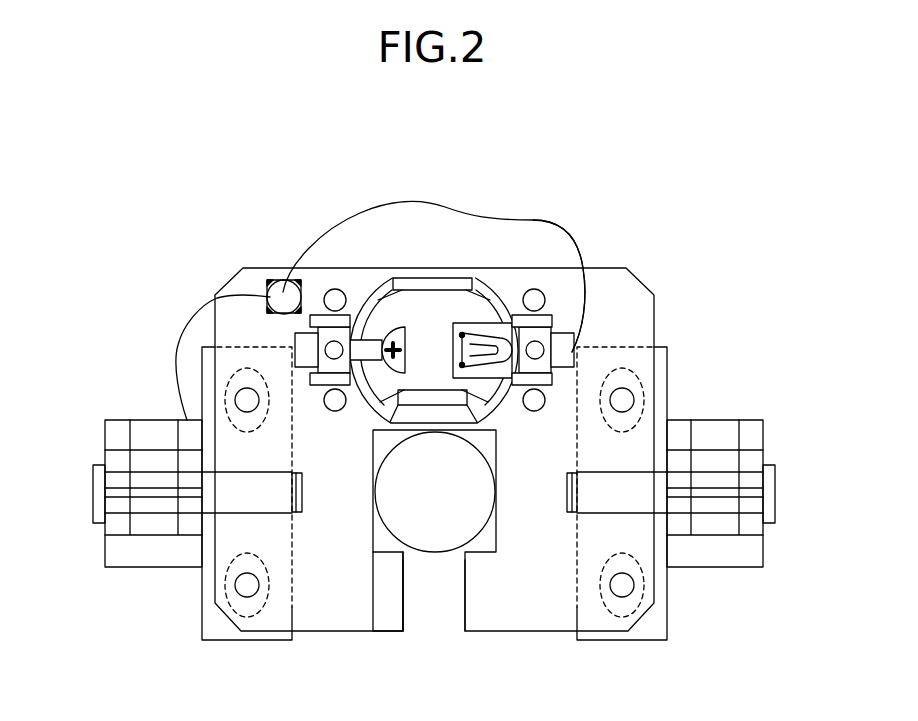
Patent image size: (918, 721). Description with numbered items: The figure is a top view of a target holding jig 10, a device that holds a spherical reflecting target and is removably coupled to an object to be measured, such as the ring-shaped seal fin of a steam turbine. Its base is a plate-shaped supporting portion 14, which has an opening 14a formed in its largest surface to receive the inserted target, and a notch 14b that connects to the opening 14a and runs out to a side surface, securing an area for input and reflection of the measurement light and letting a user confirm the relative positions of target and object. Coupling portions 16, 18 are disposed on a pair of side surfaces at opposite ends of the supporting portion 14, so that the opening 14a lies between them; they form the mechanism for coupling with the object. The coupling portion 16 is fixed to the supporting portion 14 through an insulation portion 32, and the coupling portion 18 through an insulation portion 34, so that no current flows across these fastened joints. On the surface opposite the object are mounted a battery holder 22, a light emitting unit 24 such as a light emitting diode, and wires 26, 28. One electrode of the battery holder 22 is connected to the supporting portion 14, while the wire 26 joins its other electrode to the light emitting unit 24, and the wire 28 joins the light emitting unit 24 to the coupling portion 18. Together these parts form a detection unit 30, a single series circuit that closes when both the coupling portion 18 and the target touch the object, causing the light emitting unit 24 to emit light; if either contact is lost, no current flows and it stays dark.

The target holding jig 10 is at (491, 159).
The supporting portion 14 is at (540, 613).
The opening 14a is at (373, 533).
The notch 14b is at (424, 593).
The coupling portion 16 is at (708, 430).
The coupling portion 18 is at (137, 417).
The battery holder 22 is at (445, 308).
The light emitting unit 24 is at (279, 279).
The wire 26 is at (533, 218).
The wire 28 is at (190, 313).
The detection unit 30 is at (365, 192).
The insulation portion 32 is at (635, 355).
The insulation portion 34 is at (263, 633).